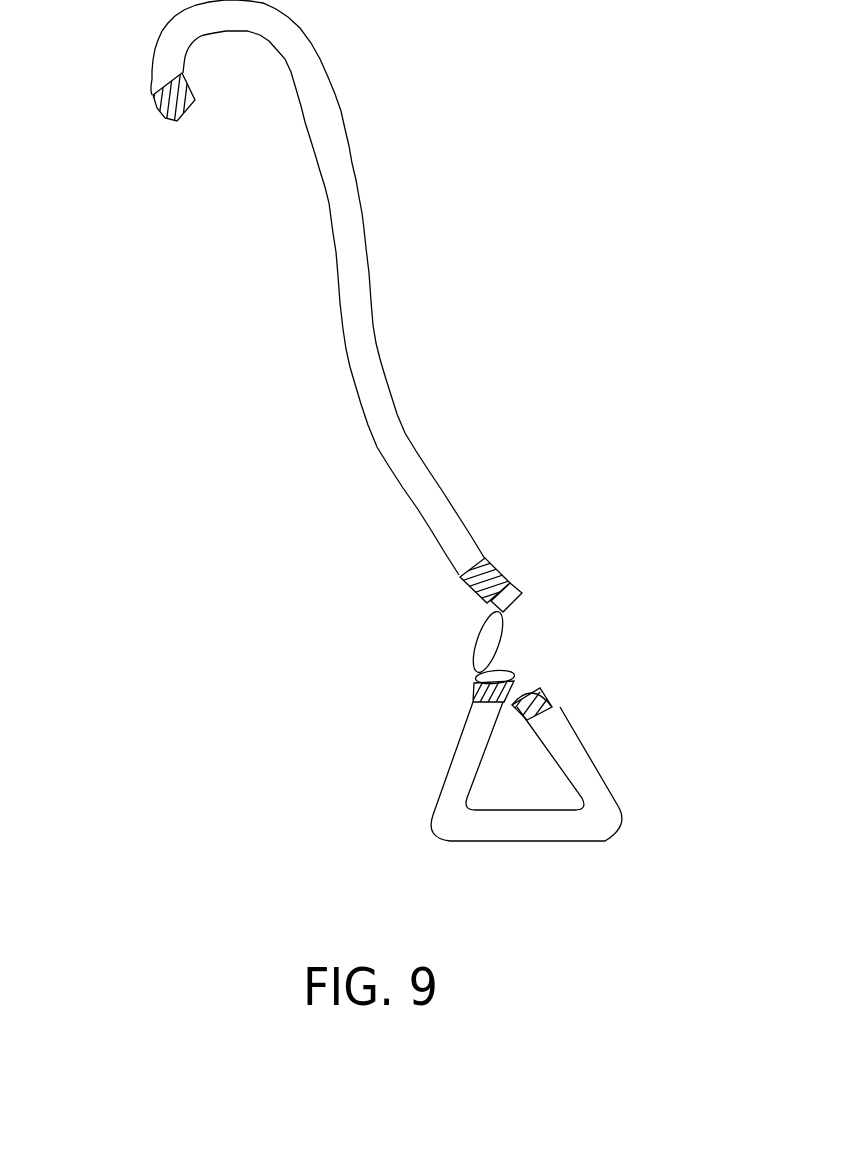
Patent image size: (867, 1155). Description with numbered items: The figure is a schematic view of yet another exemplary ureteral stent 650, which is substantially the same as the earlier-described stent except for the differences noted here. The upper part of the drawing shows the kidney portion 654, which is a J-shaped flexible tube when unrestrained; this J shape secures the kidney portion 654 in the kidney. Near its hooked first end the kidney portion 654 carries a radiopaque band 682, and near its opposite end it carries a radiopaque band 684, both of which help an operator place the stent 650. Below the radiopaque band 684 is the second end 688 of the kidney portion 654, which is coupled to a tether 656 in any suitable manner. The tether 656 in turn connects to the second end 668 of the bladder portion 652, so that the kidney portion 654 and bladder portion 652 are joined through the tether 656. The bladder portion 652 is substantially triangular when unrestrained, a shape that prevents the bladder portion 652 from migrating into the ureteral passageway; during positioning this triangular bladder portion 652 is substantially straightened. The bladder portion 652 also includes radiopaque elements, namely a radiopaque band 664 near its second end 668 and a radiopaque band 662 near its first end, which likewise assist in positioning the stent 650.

The ureteral stent 650 is at (390, 420).
The kidney portion 654 is at (310, 253).
The radiopaque band 682 is at (162, 113).
The radiopaque band 684 is at (495, 567).
The second end of the kidney portion 688 is at (513, 583).
The tether 656 is at (477, 638).
The bladder portion 652 is at (530, 731).
The radiopaque band 664 is at (523, 680).
The second end of the bladder portion 668 is at (473, 693).
The radiopaque band 662 is at (547, 700).